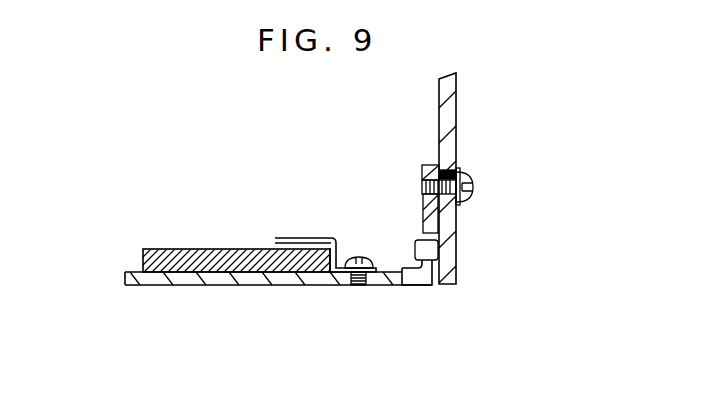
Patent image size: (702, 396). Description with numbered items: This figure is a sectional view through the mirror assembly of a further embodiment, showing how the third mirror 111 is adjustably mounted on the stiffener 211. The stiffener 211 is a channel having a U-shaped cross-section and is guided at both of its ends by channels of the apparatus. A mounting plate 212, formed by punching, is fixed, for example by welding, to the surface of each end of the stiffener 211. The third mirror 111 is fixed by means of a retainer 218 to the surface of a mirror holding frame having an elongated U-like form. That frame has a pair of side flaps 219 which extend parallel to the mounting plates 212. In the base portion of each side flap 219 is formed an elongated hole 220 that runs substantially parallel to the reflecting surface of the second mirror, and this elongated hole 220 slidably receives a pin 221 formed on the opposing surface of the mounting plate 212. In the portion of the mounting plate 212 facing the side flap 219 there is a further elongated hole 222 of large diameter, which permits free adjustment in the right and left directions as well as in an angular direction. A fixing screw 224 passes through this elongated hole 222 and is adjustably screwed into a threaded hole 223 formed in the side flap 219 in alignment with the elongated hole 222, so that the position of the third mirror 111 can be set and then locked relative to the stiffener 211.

The third mirror 111 is at (175, 250).
The stiffener 211 is at (183, 288).
The mounting plate 212 is at (454, 82).
The retainer 218 is at (310, 238).
The side flap 219 is at (423, 215).
The elongated hole 220 is at (431, 285).
The pin 221 is at (428, 250).
The elongated hole 222 is at (458, 170).
The threaded hole 223 is at (440, 168).
The fixing screw 224 is at (466, 197).